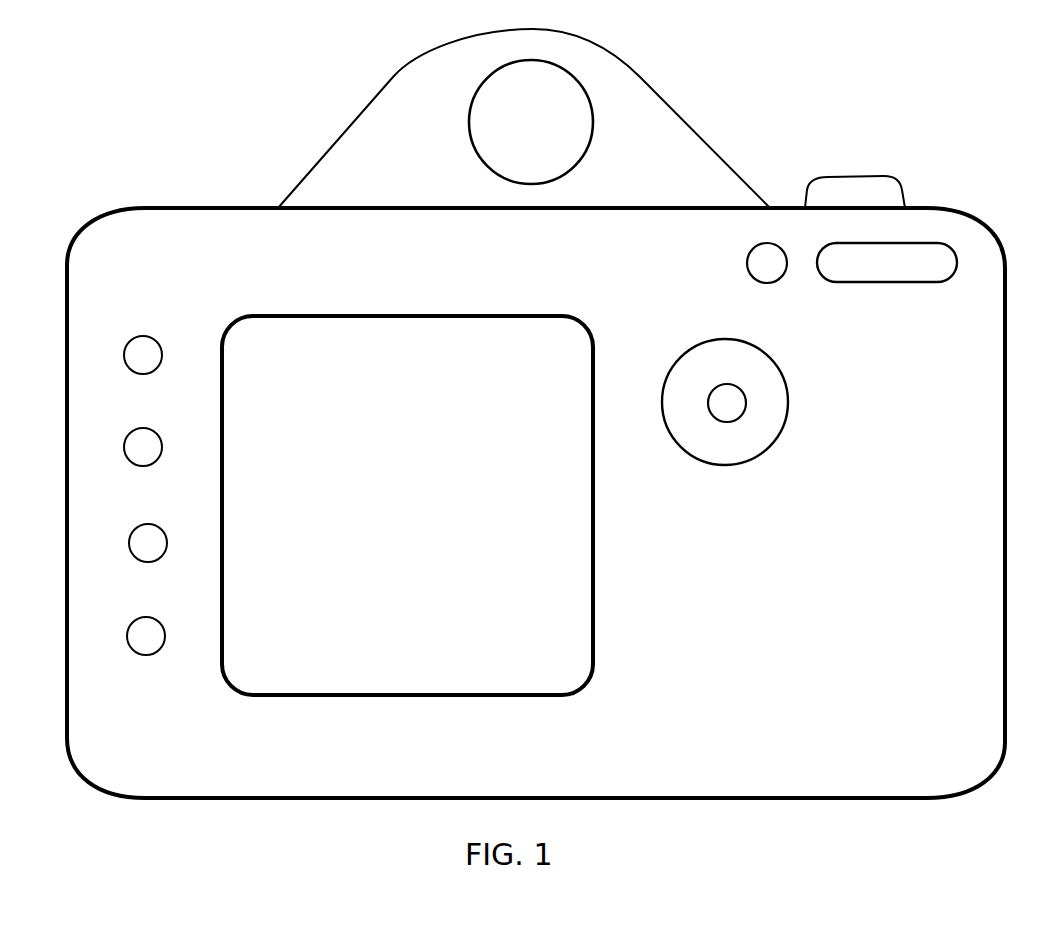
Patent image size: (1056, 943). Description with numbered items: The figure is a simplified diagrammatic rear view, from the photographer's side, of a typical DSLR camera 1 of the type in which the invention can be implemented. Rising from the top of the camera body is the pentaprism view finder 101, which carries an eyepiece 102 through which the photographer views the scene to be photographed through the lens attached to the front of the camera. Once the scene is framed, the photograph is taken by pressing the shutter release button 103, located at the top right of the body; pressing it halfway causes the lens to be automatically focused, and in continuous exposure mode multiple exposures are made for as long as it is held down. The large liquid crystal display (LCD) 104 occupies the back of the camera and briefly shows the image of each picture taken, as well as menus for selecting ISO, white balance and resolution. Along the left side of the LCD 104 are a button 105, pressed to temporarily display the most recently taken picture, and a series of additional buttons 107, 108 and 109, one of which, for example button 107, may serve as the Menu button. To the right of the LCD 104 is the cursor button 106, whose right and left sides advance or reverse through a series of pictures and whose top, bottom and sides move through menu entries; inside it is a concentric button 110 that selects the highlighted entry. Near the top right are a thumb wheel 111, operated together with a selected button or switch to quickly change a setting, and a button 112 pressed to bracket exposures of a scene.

The DSLR camera 1 is at (947, 160).
The pentaprism view finder 101 is at (646, 84).
The eyepiece 102 is at (470, 143).
The shutter release button 103 is at (833, 180).
The liquid crystal display (LCD) 104 is at (334, 313).
The button 105 is at (125, 353).
The cursor button 106 is at (738, 465).
The button 107 is at (125, 434).
The button 108 is at (130, 535).
The button 109 is at (130, 633).
The concentric button 110 is at (745, 390).
The thumb wheel 111 is at (902, 282).
The button 112 is at (747, 265).